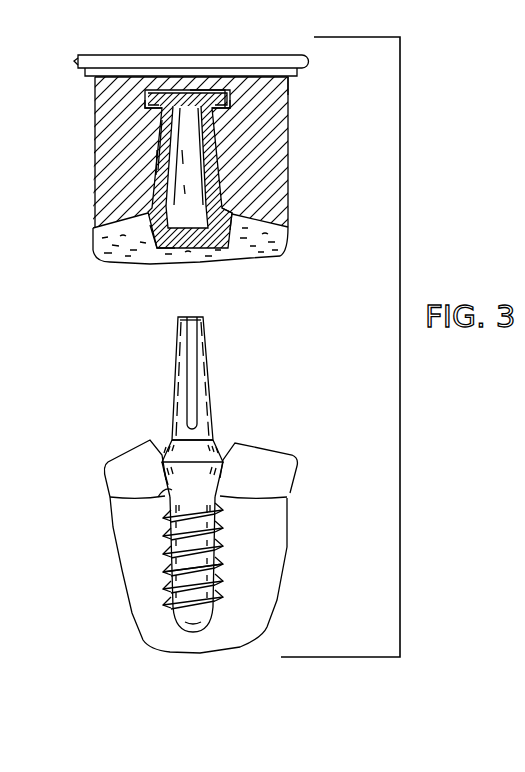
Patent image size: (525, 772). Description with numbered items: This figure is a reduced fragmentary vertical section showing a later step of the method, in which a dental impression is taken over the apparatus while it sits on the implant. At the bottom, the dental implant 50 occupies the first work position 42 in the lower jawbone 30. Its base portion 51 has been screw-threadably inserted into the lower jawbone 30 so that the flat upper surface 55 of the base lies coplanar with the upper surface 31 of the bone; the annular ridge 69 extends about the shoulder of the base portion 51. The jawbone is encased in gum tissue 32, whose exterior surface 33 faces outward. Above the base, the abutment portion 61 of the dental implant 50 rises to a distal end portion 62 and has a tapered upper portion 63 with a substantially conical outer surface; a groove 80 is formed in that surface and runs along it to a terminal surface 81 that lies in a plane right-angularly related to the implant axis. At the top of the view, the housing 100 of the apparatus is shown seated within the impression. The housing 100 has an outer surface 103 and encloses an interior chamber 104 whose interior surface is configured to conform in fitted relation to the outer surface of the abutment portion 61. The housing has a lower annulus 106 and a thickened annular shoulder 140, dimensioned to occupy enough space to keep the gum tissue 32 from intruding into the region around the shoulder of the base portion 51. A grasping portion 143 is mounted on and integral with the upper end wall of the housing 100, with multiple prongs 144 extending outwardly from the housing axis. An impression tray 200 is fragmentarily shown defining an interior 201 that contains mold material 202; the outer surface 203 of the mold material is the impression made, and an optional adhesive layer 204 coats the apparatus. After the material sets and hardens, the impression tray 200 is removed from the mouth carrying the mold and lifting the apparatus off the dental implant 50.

The impression tray 200 is at (78, 62).
The interior 201 is at (292, 82).
The mold material 202 is at (273, 122).
The outer surface of the mold material 203 is at (257, 253).
The housing 100 is at (207, 147).
The outer surface 103 is at (160, 143).
The adhesive layer 204 is at (157, 162).
The annular shoulder 140 is at (222, 217).
The lower annulus 106 is at (153, 250).
The grasping portion 143 is at (215, 98).
The prongs 144 is at (153, 97).
The interior chamber 104 is at (188, 173).
The first work position 42 is at (227, 383).
The groove 80 is at (190, 353).
The terminal surface 81 is at (193, 316).
The tapered upper portion 63 is at (205, 338).
The abutment portion 61 is at (178, 415).
The distal end portion 62 is at (202, 435).
The flat upper surface 55 is at (170, 490).
The annular ridge 69 is at (163, 477).
The dental implant 50 is at (183, 542).
The base portion 51 is at (197, 573).
The lower jawbone 30 is at (265, 547).
The upper surface 31 is at (267, 497).
The gum tissue 32 is at (250, 462).
The exterior surface 33 is at (287, 450).